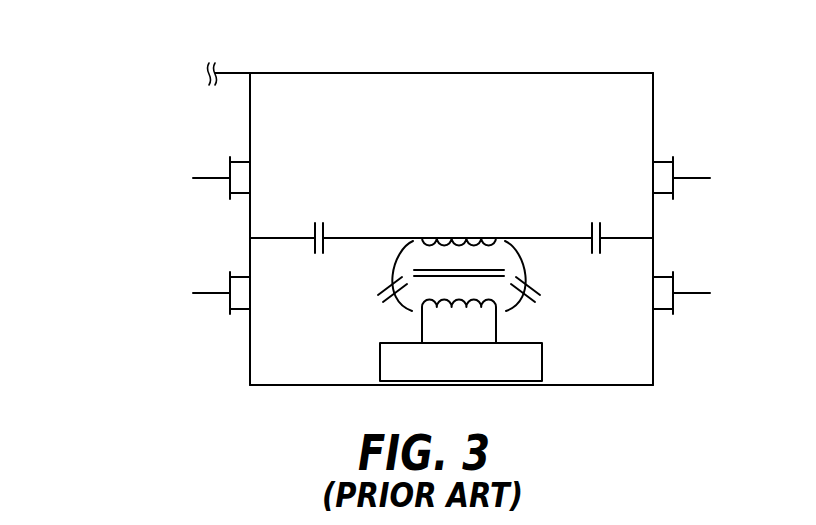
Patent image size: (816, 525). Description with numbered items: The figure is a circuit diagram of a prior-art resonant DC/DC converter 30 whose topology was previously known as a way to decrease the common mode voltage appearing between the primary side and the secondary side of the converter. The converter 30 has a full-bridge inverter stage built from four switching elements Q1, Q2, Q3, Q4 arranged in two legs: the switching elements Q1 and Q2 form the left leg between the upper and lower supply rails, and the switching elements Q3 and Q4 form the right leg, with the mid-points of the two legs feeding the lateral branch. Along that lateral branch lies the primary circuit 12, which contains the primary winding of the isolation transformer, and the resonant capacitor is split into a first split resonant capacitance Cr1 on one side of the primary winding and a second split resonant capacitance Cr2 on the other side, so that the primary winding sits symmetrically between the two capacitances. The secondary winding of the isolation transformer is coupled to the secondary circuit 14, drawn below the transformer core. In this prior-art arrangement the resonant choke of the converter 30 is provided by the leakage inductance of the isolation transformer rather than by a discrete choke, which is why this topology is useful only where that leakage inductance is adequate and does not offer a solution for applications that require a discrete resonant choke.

The DC/DC converter 30 is at (146, 66).
The primary circuit 12 is at (331, 346).
The secondary circuit 14 is at (523, 369).
The switching element Q1 is at (239, 178).
The switching element Q2 is at (239, 293).
The switching element Q3 is at (665, 178).
The switching element Q4 is at (665, 293).
The first split resonant capacitance Cr1 is at (319, 253).
The second split resonant capacitance Cr2 is at (597, 252).